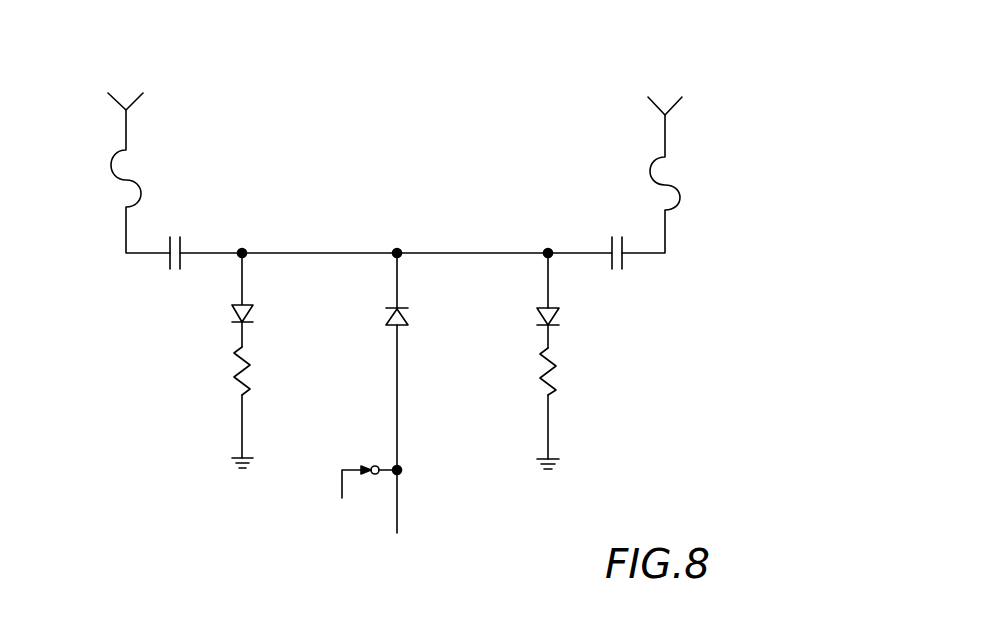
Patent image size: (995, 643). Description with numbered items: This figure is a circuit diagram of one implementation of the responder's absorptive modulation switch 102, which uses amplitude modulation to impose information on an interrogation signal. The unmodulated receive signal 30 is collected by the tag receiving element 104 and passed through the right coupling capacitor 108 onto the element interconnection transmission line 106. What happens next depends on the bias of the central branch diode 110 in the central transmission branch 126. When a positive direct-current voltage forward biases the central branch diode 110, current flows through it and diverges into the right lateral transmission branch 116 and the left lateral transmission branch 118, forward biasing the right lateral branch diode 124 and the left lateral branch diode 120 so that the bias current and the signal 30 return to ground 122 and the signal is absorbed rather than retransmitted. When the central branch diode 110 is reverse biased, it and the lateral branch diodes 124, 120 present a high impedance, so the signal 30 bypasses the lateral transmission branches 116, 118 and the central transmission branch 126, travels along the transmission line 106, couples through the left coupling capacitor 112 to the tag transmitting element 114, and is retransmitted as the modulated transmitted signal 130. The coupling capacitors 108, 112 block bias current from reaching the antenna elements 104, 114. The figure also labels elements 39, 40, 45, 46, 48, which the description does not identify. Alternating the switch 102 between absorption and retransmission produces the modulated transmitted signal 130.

The modulated transmitted signal 130 is at (158, 28).
The tag transmitting element 114 is at (125, 133).
The left coupling capacitor 112 is at (175, 232).
The absorptive modulation switch 102 is at (431, 152).
The element interconnection transmission line 106 is at (509, 252).
The right coupling capacitor 108 is at (615, 237).
The unmodulated receive signal 30 is at (642, 28).
The tag receiving element 104 is at (667, 135).
The left lateral branch diode 120 is at (253, 316).
The first 50 ohm termination resistor 48 is at (237, 362).
The left lateral transmission branch 118 is at (242, 418).
The ground 122 is at (235, 460).
The central branch diode 110 is at (392, 307).
The central transmission branch 126 is at (397, 396).
The control node 45 is at (373, 466).
The control signal input line 46 is at (342, 486).
The diode 39 is at (538, 310).
The right lateral branch diode 124 is at (558, 320).
The second 50 ohm termination resistor 40 is at (542, 364).
The right lateral transmission branch 116 is at (548, 420).